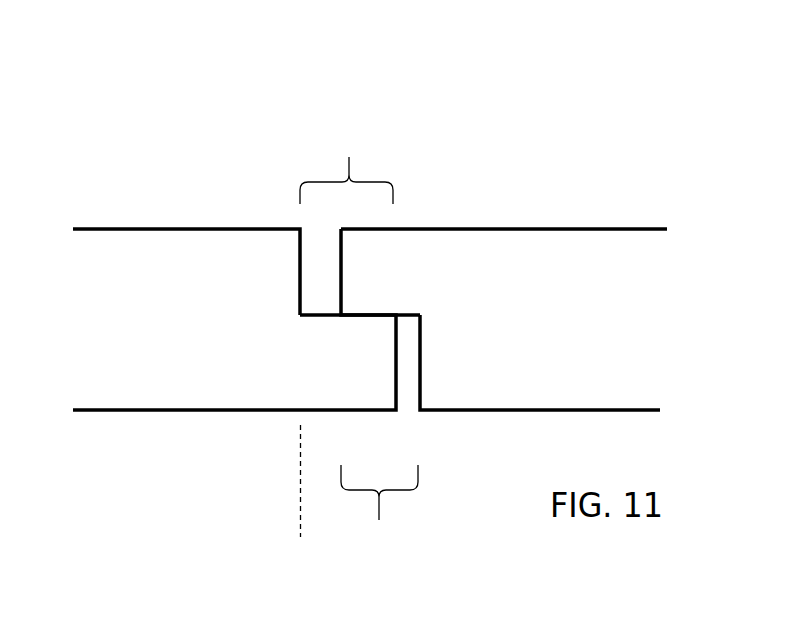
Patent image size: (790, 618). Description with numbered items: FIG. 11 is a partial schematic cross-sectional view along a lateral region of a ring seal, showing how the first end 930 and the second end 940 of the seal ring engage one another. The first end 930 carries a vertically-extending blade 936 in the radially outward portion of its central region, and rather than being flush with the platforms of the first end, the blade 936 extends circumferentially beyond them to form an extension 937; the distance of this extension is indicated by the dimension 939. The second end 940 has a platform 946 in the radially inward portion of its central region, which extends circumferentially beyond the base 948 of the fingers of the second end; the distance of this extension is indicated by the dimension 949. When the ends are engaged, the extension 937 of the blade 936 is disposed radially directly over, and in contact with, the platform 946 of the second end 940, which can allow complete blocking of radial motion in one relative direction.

The second end 940 is at (234, 264).
The first end 930 is at (504, 224).
The distance of the extension of the platform of the second end 949 is at (346, 165).
The extension of the blade 937 is at (380, 262).
The blade 936 is at (534, 259).
The platform 946 is at (349, 373).
The base of the fingers 948 is at (300, 502).
The distance of the extension of the blade 939 is at (379, 507).